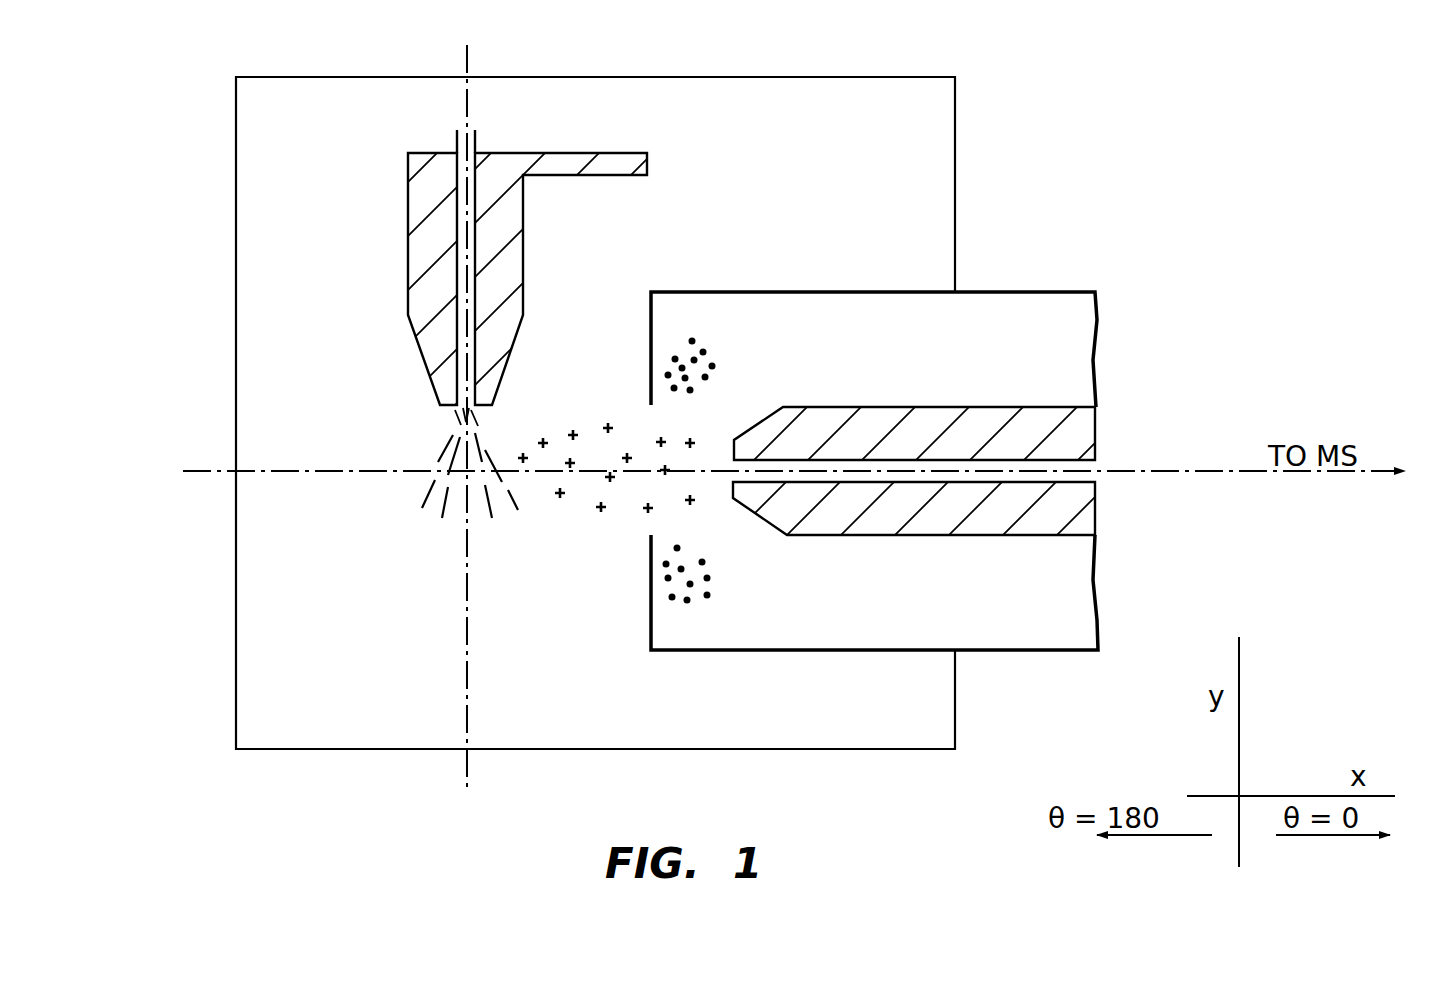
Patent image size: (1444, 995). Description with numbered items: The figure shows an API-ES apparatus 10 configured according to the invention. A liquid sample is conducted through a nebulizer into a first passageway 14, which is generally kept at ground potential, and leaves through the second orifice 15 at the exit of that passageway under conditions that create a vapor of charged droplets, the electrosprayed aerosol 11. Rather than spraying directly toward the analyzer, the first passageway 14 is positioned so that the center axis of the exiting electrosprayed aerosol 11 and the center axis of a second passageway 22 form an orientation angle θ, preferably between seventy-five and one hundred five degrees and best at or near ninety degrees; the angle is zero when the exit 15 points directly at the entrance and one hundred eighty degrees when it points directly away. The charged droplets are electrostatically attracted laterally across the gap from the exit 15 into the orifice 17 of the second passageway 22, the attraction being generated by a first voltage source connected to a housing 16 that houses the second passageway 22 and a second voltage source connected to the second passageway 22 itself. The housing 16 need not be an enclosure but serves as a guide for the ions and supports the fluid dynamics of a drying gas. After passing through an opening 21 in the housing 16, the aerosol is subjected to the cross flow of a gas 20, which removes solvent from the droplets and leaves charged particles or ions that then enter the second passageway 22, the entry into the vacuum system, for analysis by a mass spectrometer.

The apparatus 10 is at (110, 870).
The electrosprayed aerosol 11 is at (422, 494).
The first passageway 14 is at (464, 345).
The second orifice 15 is at (464, 405).
The housing 16 is at (663, 292).
The orifice 17 is at (716, 470).
The gas 20 is at (745, 367).
The opening 21 is at (609, 544).
The second passageway 22 is at (1023, 471).